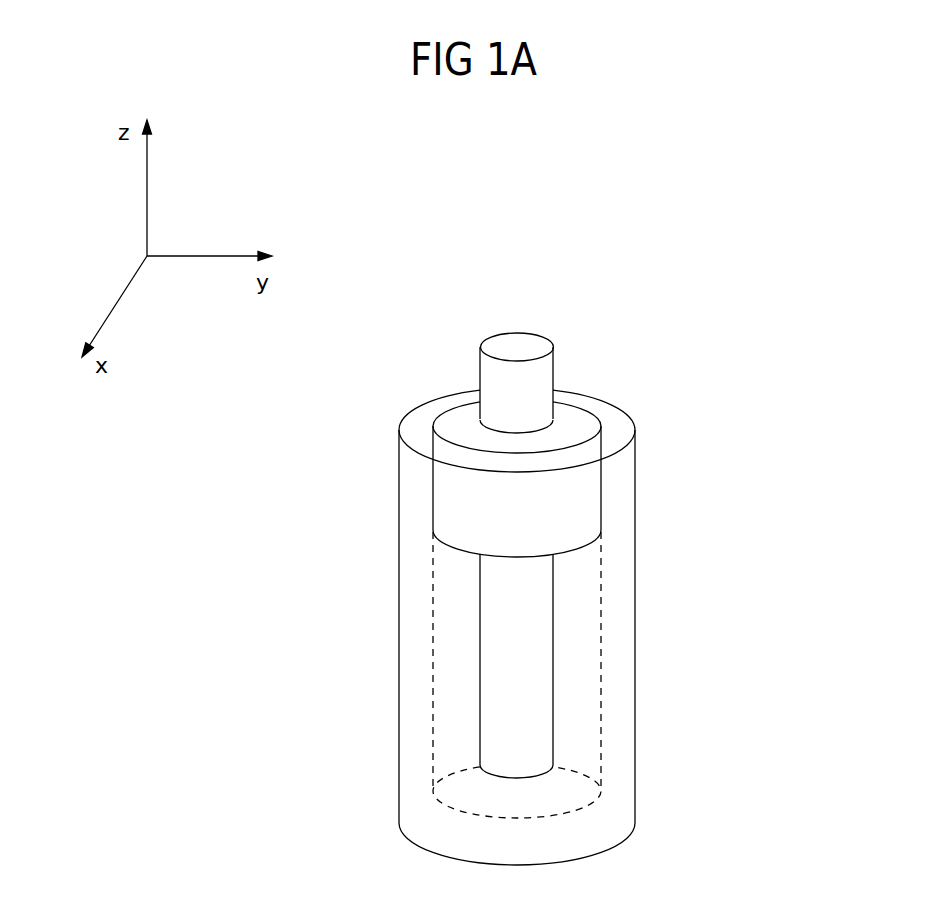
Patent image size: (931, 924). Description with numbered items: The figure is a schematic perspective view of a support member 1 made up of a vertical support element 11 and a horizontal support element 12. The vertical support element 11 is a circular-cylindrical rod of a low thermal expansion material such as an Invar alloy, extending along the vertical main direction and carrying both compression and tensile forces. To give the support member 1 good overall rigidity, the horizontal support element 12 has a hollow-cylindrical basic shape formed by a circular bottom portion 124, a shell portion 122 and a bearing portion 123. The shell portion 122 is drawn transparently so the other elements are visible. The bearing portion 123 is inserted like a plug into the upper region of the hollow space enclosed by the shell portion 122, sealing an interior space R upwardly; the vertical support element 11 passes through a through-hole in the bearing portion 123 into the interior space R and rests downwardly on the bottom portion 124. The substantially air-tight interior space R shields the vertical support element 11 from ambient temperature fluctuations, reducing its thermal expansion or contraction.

The support member 1 is at (706, 280).
The vertical support element 11 is at (490, 367).
The horizontal support element 12 is at (345, 491).
The shell portion 122 is at (577, 497).
The bearing portion 123 is at (570, 417).
The bottom portion 124 is at (482, 833).
The interior space R is at (588, 625).